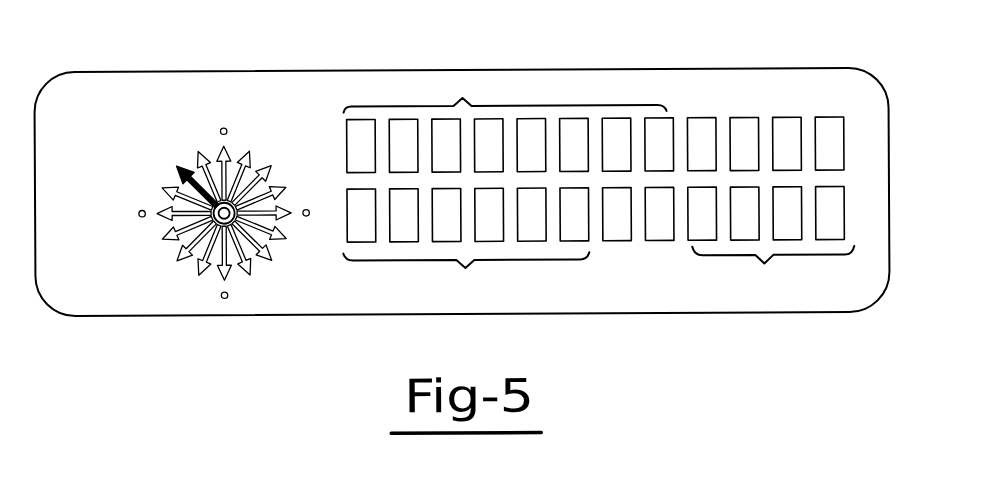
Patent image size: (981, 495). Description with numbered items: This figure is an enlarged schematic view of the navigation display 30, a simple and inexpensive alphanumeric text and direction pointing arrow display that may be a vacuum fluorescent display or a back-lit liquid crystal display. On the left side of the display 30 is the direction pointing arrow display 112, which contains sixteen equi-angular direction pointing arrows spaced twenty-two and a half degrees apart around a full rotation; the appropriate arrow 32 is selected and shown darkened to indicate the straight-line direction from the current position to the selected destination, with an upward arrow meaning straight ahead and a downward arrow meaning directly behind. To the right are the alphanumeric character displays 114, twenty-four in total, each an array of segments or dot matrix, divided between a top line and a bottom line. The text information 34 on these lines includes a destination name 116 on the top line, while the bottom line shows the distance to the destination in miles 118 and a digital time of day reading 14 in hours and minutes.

The time display field 14 is at (764, 273).
The display 30 is at (121, 99).
The direction pointing arrow 32 is at (182, 165).
The text information 34 is at (524, 92).
The direction pointing arrow display 112 is at (170, 284).
The alphanumeric character displays 114 is at (830, 127).
The destination name 116 is at (455, 92).
The distance display field 118 is at (465, 275).